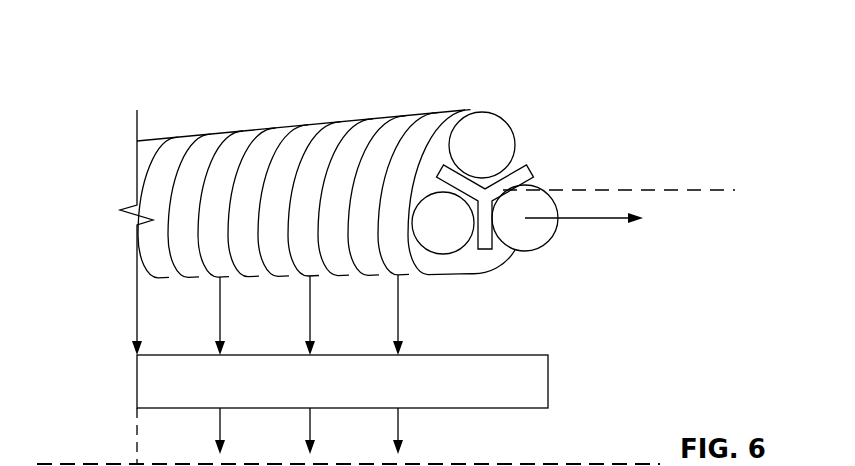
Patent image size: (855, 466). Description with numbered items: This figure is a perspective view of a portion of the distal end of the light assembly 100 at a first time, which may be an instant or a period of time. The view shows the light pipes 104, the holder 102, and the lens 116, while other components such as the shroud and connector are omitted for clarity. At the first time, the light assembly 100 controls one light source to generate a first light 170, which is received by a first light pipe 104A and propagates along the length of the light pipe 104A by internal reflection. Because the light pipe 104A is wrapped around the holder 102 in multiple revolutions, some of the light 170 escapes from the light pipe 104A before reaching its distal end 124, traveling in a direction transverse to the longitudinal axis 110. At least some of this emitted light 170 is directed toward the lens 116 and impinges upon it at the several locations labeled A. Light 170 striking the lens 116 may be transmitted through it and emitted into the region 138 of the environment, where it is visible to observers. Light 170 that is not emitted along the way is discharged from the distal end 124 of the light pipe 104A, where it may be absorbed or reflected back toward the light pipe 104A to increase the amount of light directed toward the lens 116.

The light assembly 100 is at (178, 88).
The holder 102 is at (507, 190).
The light pipes 104 is at (430, 143).
The first light pipe 104A is at (218, 148).
The longitudinal axis 110 is at (642, 190).
The lens 116 is at (135, 363).
The distal end 124 is at (517, 253).
The region 138 is at (482, 434).
The first light 170 is at (582, 222).